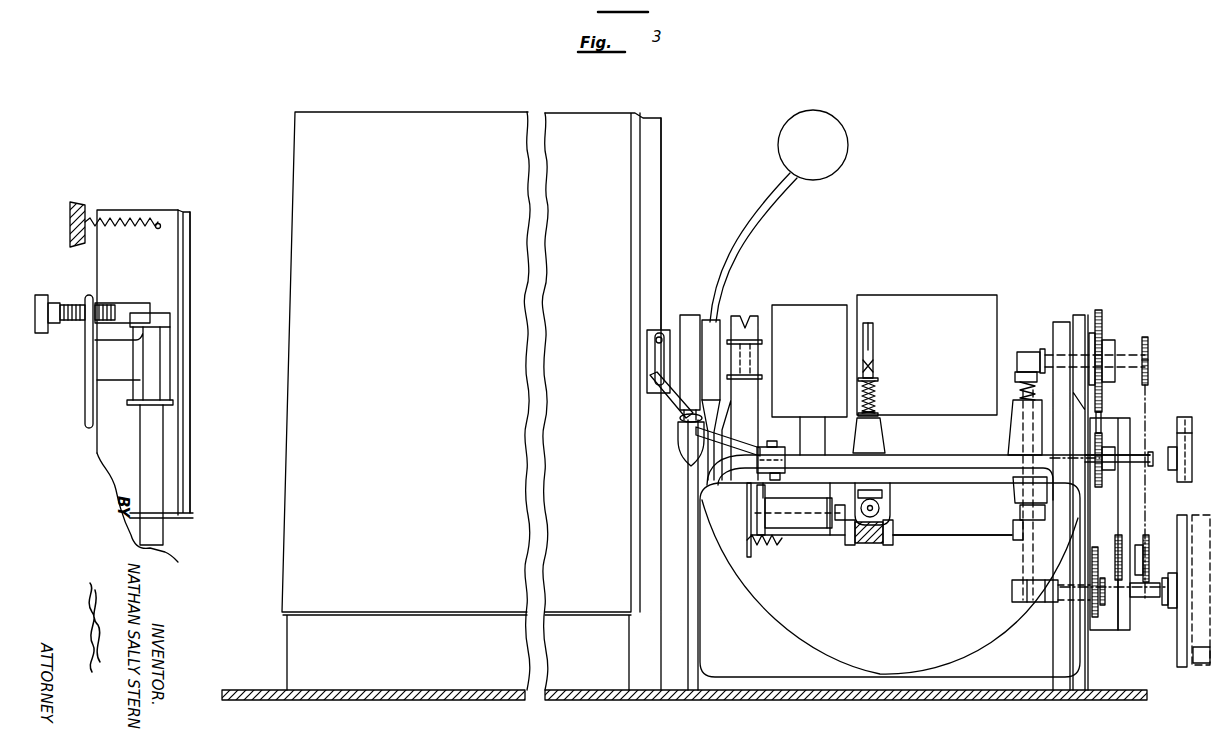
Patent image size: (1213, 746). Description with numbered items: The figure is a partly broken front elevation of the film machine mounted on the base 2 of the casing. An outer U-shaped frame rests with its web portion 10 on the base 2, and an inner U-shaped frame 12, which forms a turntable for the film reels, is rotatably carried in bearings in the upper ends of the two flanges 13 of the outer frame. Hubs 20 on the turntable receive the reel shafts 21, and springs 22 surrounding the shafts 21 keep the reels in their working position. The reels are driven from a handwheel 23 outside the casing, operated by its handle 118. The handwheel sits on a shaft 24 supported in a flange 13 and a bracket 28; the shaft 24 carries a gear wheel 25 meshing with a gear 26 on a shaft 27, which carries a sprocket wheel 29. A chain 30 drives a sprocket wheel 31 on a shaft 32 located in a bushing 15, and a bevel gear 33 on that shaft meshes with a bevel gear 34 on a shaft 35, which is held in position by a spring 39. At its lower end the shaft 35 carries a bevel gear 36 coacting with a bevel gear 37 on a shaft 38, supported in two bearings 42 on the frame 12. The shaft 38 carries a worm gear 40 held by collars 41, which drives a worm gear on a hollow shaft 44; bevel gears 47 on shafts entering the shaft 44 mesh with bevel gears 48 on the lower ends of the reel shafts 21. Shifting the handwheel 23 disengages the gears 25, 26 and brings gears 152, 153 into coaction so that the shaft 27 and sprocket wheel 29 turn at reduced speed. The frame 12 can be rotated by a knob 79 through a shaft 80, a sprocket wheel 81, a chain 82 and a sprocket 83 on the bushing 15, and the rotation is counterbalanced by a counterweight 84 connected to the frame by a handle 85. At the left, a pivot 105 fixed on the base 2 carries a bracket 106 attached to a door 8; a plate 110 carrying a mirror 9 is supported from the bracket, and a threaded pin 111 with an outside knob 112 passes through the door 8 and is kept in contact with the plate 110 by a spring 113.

The base 2 is at (411, 700).
The door 8 is at (77, 203).
The mirror 9 is at (192, 283).
The web portion 10 is at (1020, 692).
The inner U-shaped frame 12 is at (949, 472).
The flanges 13 is at (698, 594).
The bushing 15 is at (1108, 343).
The hubs 20 is at (886, 442).
The shafts 21 is at (877, 412).
The springs 22 is at (876, 386).
The handwheel 23 is at (1186, 515).
The shaft 24 is at (1147, 600).
The gear wheel 25 is at (1090, 613).
The gear 26 is at (1095, 547).
The shaft 27 is at (1117, 562).
The bracket 28 is at (1128, 482).
The sprocket wheel 29 is at (1148, 549).
The chain 30 is at (1148, 490).
The sprocket wheel 31 is at (1149, 341).
The shaft 32 is at (1149, 358).
The bevel gear 33 is at (1038, 352).
The bevel gear 34 is at (1018, 372).
The shaft 35 is at (1024, 426).
The bevel gear 36 is at (1033, 521).
The bevel gear 37 is at (1020, 541).
The shaft 38 is at (952, 537).
The spring 39 is at (1020, 394).
The worm gear 40 is at (870, 546).
The collars 41 is at (848, 546).
The bearings 42 is at (790, 548).
The shaft 44 is at (895, 520).
The bevel gears 47 is at (880, 510).
The bevel gears 48 is at (882, 495).
The knob 79 is at (1186, 445).
The shaft 80 is at (1152, 452).
The sprocket wheel 81 is at (1109, 459).
The chain 82 is at (1102, 420).
The sprocket 83 is at (1103, 392).
The counterweight 84 is at (848, 140).
The handle 85 is at (739, 228).
The pivot 105 is at (164, 541).
The bracket 106 is at (163, 389).
The plate 110 is at (186, 250).
The threaded pin 111 is at (72, 303).
The knob 112 is at (41, 333).
The spring 113 is at (130, 221).
The handle 118 is at (1200, 666).
The gear 152 is at (1103, 610).
The gear 153 is at (1119, 583).